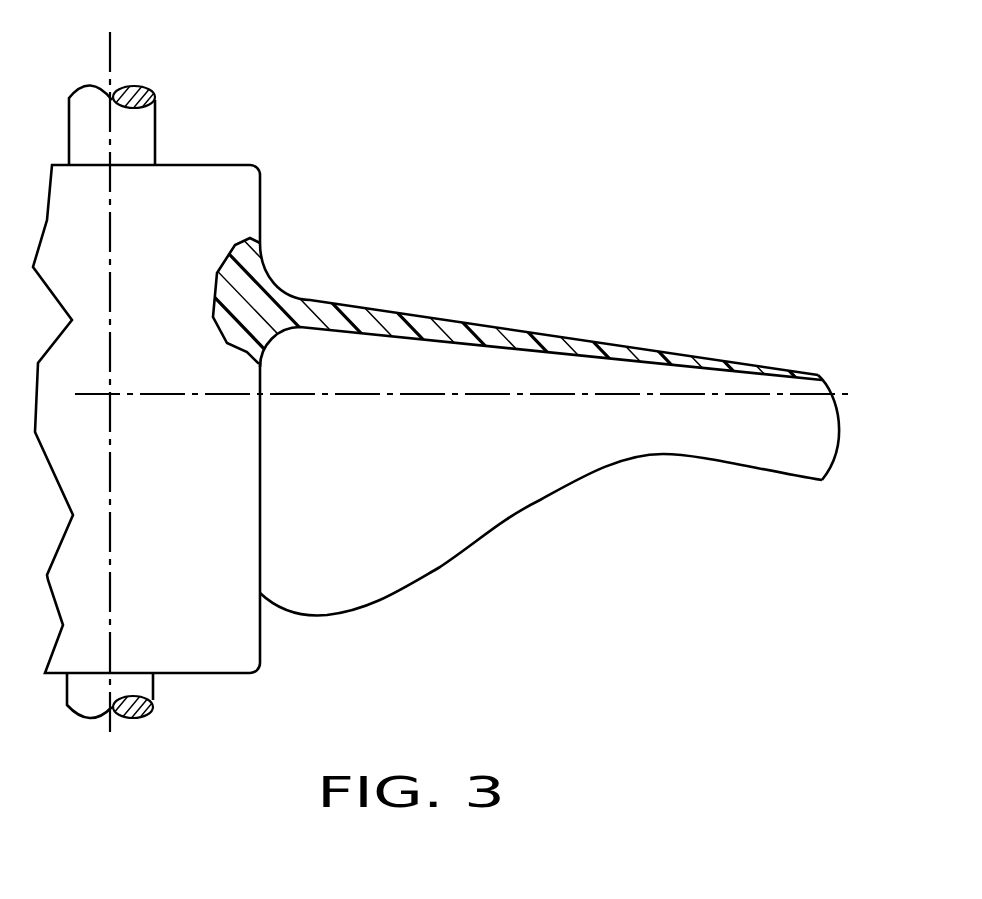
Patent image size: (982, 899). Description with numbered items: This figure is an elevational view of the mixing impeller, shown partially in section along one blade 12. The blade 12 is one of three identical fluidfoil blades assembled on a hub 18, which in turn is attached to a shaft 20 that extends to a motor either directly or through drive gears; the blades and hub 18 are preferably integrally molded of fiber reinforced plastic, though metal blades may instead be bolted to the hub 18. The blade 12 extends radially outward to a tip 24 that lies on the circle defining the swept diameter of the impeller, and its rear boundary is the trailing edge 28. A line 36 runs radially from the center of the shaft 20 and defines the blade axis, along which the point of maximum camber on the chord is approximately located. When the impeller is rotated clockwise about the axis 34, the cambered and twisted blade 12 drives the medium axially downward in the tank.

The blade 12 is at (564, 422).
The hub 18 is at (243, 200).
The shaft 20 is at (155, 124).
The blade tip 24 is at (842, 428).
The trailing edge 28 is at (590, 473).
The axis 34 is at (113, 53).
The blade axis line 36 is at (387, 397).